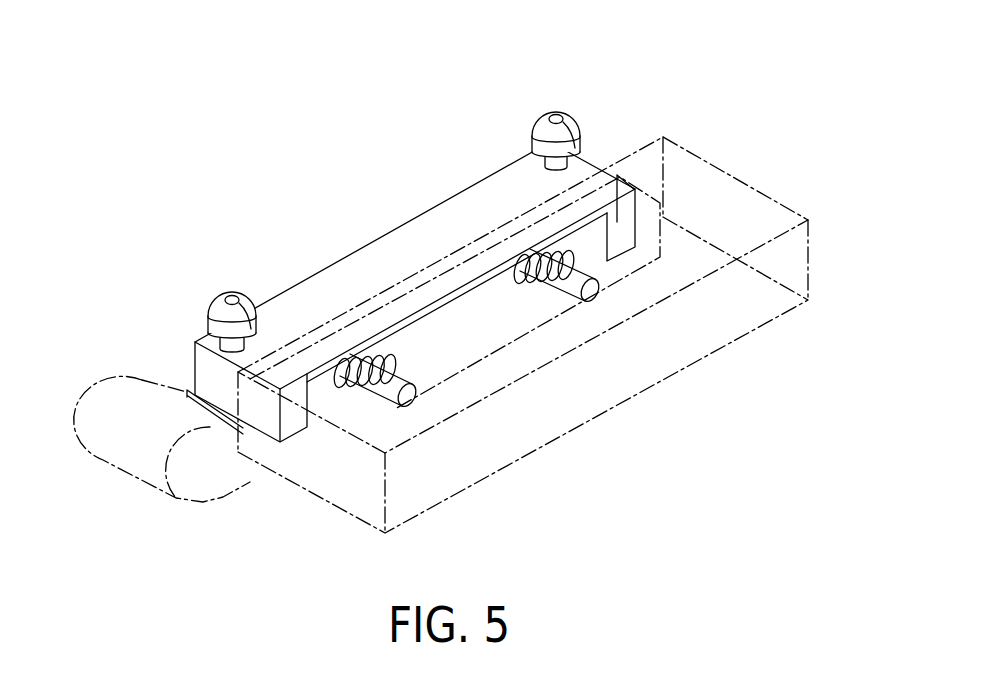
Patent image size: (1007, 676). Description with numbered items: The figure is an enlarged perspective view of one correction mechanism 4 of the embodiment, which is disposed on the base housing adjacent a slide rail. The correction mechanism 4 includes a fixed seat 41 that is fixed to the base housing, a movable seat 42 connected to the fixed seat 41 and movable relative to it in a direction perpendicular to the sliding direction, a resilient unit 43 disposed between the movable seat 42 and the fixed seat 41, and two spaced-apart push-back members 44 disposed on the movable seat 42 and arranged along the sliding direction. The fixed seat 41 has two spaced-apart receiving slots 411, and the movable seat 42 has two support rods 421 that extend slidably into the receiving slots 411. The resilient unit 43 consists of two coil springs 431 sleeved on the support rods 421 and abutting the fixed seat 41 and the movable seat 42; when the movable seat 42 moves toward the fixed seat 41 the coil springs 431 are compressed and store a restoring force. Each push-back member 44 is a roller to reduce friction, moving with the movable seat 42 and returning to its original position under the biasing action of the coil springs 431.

The correction mechanism 4 is at (697, 123).
The fixed seat 41 is at (717, 317).
The receiving slot 411 is at (607, 303).
The movable seat 42 is at (363, 268).
The support rod 421 is at (363, 398).
The resilient unit 43 is at (352, 398).
The coil spring 431 is at (514, 298).
The push-back member 44 is at (213, 308).